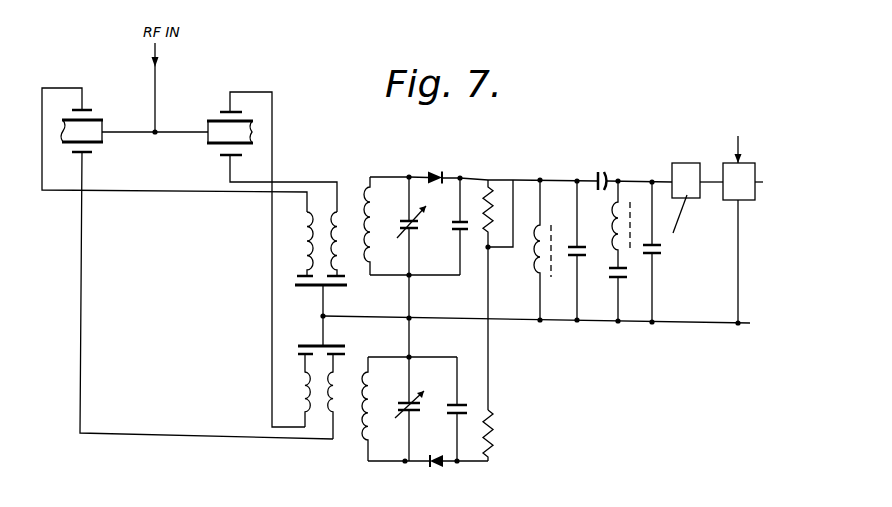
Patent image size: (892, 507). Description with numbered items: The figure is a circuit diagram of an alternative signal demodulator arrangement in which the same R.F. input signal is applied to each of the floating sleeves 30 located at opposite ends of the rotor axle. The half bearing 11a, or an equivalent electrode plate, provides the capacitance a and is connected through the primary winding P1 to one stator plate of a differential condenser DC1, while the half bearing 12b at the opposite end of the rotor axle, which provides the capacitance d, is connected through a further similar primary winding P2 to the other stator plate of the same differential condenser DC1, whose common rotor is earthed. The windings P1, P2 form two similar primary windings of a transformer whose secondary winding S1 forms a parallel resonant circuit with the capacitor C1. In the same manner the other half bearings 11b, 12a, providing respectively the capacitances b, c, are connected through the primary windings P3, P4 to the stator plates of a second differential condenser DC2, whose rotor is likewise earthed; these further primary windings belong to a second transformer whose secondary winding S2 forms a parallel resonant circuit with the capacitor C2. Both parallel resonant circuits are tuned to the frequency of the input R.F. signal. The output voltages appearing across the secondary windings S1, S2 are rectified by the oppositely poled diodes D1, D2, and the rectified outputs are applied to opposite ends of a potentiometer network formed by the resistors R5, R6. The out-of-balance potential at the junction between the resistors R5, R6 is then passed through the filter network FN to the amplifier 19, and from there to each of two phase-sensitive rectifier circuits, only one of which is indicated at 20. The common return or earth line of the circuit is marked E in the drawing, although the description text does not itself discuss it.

The half bearing 11a is at (86, 109).
The half bearing 11b is at (92, 153).
The half bearing 12a is at (225, 111).
The half bearing 12b is at (223, 158).
The floating sleeve 30 is at (103, 121).
The amplifier 19 is at (681, 170).
The phase-sensitive rectifier circuit 20 is at (732, 192).
The capacitance a is at (55, 107).
The capacitance b is at (55, 156).
The capacitance c is at (254, 112).
The capacitance d is at (255, 159).
The primary winding P1 is at (306, 243).
The primary winding P2 is at (345, 211).
The primary winding P3 is at (343, 424).
The primary winding P4 is at (291, 390).
The secondary winding S1 is at (380, 226).
The secondary winding S2 is at (376, 409).
The capacitor C1 is at (416, 247).
The capacitor C2 is at (413, 409).
The diode D1 is at (433, 165).
The diode D2 is at (430, 474).
The resistor R5 is at (490, 187).
The resistor R6 is at (499, 435).
The differential condenser DC1 is at (337, 311).
The differential condenser DC2 is at (333, 341).
The filter network FN is at (611, 182).
The common return line E is at (690, 325).